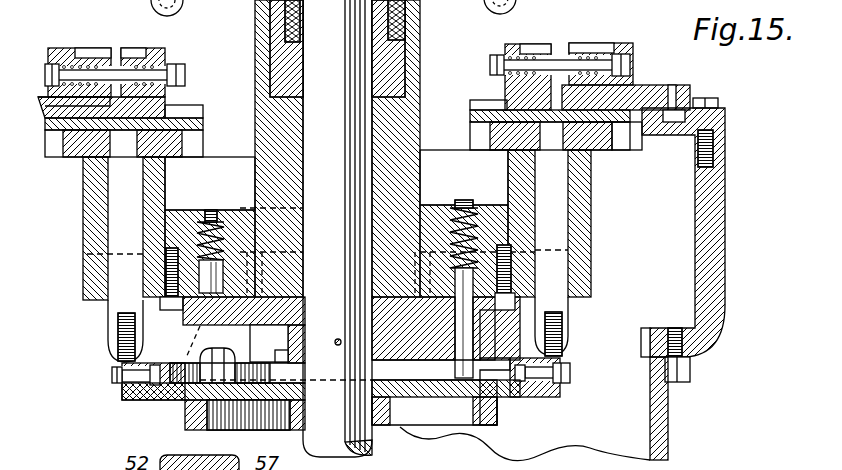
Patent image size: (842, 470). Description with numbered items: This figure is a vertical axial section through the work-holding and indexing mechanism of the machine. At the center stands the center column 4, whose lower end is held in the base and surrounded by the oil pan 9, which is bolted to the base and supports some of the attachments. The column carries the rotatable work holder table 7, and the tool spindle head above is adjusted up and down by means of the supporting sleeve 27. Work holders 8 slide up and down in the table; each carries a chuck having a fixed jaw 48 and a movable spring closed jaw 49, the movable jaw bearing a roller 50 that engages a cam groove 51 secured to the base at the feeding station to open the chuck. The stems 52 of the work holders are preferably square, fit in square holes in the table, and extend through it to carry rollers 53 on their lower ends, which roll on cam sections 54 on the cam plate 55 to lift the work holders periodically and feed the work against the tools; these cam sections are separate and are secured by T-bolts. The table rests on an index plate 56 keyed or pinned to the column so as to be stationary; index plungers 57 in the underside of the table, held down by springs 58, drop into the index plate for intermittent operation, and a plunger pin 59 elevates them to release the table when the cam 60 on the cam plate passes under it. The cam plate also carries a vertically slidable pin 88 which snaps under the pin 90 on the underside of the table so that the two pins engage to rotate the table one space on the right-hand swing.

The center column 4 is at (337, 228).
The work holder table 7 is at (583, 256).
The work holder 8 is at (177, 148).
The oil pan 9 is at (668, 432).
The supporting sleeve 27 is at (412, 10).
The fixed jaw 48 is at (163, 57).
The movable spring closed jaw 49 is at (66, 48).
The roller 50 is at (690, 104).
The cam groove 51 is at (712, 123).
The stem 52 is at (122, 222).
The roller 53 is at (125, 342).
The cam section 54 is at (125, 386).
The cam plate 55 is at (497, 410).
The index plate 56 is at (200, 312).
The index plunger 57 is at (207, 270).
The spring 58 is at (222, 295).
The plunger pin 59 is at (490, 334).
The cam 60 is at (445, 372).
The vertically slidable pin 88 is at (158, 402).
The pin 90 is at (257, 330).